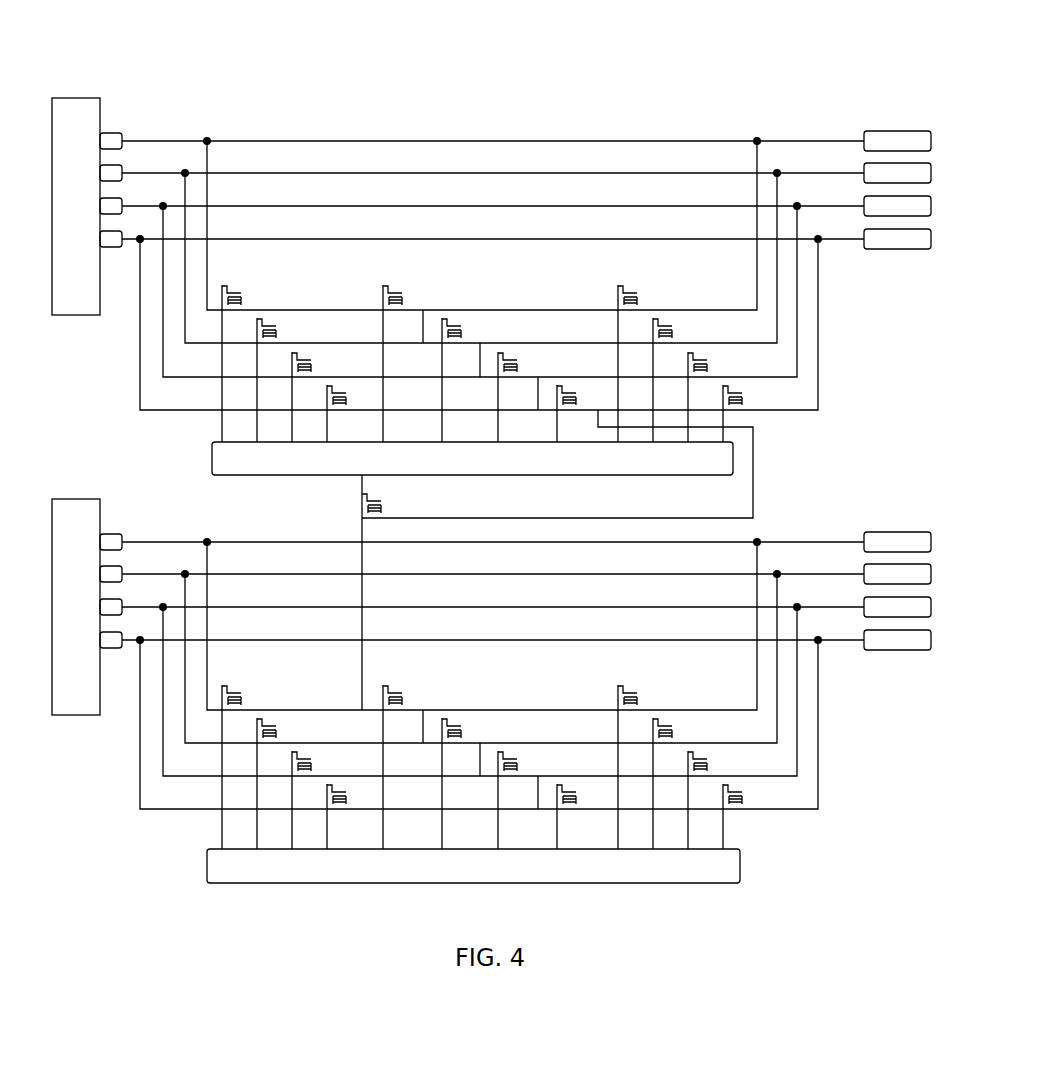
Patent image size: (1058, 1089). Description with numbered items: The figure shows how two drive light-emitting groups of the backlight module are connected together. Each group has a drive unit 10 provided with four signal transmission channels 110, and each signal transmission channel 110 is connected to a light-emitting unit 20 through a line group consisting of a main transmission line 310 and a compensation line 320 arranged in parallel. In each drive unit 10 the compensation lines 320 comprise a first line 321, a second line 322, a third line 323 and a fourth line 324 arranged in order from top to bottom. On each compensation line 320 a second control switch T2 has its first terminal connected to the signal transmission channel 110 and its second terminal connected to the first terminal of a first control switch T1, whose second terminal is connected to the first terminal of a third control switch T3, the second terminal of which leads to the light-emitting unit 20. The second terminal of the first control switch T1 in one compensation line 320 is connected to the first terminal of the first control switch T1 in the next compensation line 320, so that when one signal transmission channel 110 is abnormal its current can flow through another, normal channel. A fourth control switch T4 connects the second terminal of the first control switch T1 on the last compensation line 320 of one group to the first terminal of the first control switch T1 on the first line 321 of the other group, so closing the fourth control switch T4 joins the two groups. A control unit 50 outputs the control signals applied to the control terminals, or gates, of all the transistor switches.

The drive unit 10 is at (83, 97).
The signal transmission channel 110 is at (118, 134).
The light-emitting unit 20 is at (880, 131).
The main transmission line 310 is at (563, 141).
The compensation line 320 is at (545, 277).
The first line 321 is at (757, 277).
The second line 322 is at (777, 313).
The third line 323 is at (797, 355).
The fourth line 324 is at (885, 280).
The control unit 50 is at (232, 452).
The first control switch T1 is at (557, 567).
The second control switch T2 is at (299, 567).
The third control switch T3 is at (695, 567).
The fourth control switch T4 is at (388, 592).